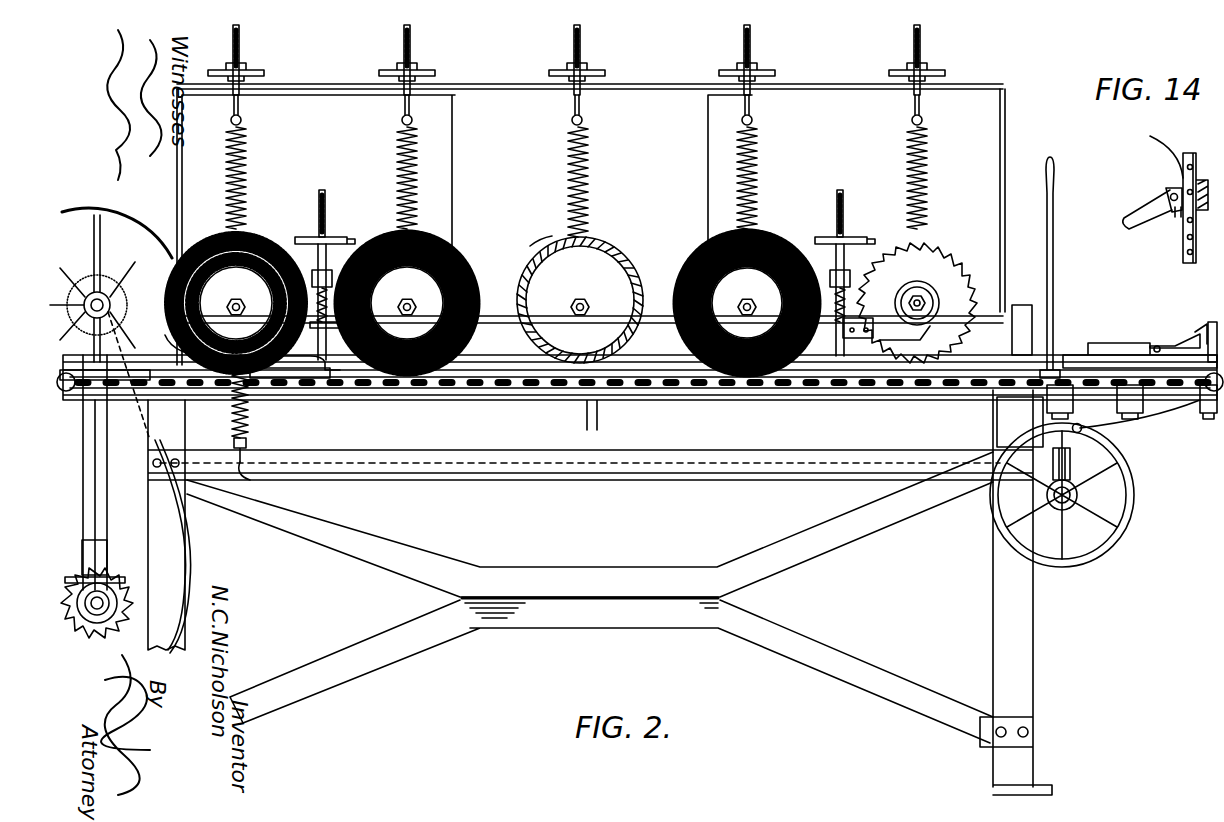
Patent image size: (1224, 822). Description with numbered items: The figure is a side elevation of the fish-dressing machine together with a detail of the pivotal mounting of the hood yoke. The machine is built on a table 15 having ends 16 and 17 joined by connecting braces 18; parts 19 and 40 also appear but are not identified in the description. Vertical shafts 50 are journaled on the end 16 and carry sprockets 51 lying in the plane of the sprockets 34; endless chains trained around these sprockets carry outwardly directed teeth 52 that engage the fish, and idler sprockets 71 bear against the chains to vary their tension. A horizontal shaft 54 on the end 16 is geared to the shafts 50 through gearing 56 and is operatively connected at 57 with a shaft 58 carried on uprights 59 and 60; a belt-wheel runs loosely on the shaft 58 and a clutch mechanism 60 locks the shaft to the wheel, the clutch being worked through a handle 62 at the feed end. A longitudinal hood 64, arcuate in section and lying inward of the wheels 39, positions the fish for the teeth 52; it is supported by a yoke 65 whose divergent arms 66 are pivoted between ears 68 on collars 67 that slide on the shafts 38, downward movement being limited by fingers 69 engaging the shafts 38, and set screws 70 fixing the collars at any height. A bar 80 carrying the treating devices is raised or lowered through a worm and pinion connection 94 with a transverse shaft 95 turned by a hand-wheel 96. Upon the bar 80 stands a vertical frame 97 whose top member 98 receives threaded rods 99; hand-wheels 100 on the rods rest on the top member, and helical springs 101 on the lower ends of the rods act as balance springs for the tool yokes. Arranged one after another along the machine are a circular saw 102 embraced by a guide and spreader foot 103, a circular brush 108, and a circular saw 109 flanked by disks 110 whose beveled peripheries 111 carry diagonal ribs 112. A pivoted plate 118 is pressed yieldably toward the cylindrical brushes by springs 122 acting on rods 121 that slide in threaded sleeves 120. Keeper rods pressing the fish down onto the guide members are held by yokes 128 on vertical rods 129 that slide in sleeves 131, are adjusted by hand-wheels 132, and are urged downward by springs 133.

In FIG. 2, the table 15 is at (692, 476).
In FIG. 2, the end of table 16 is at (172, 562).
In FIG. 2, the end of table 17 is at (1005, 572).
In FIG. 2, the connecting braces 18 is at (925, 303).
In FIG. 2, the frame member 19 is at (793, 450).
In FIG. 2, the sprockets 34 is at (1132, 408).
In FIG. 14, the shafts 38 is at (1192, 152).
In FIG. 2, the wheels 39 is at (1205, 400).
In FIG. 2, the connecting rod 40 is at (1170, 416).
In FIG. 2, the shafts 50 is at (106, 490).
In FIG. 2, the sprockets 51 is at (445, 388).
In FIG. 2, the teeth 52 is at (567, 388).
In FIG. 2, the horizontal shaft 54 is at (130, 606).
In FIG. 2, the gearing 56 is at (120, 586).
In FIG. 2, the operative connection 57 is at (108, 402).
In FIG. 2, the shaft 58 is at (105, 292).
In FIG. 2, the upright 59 is at (122, 215).
In FIG. 2, the clutch mechanism 60 is at (150, 330).
In FIG. 2, the handle 62 is at (1048, 272).
In FIG. 14, the hood 64 is at (1098, 343).
In FIG. 14, the yoke 65 is at (1150, 212).
In FIG. 14, the divergent arms 66 is at (1162, 194).
In FIG. 14, the collars 67 is at (1212, 320).
In FIG. 14, the ears 68 is at (1172, 206).
In FIG. 14, the fingers 69 is at (1178, 220).
In FIG. 2, the set screws 70 is at (236, 300).
In FIG. 2, the idler sprockets 71 is at (1052, 384).
In FIG. 2, the bar 80 is at (645, 318).
In FIG. 2, the worm and pinion connection 94 is at (1070, 472).
In FIG. 2, the transverse shaft 95 is at (1062, 502).
In FIG. 2, the hand-wheel 96 is at (1095, 553).
In FIG. 2, the vertical frame 97 is at (180, 186).
In FIG. 2, the top member 98 is at (644, 88).
In FIG. 2, the threaded rods 99 is at (240, 52).
In FIG. 2, the hand-wheels 100 is at (266, 72).
In FIG. 2, the helical springs 101 is at (248, 185).
In FIG. 2, the circular saw 102 is at (948, 262).
In FIG. 2, the guide and spreader foot 103 is at (897, 352).
In FIG. 2, the circular brush 108 is at (793, 207).
In FIG. 2, the circular saw 109 is at (612, 250).
In FIG. 2, the disks 110 is at (609, 330).
In FIG. 2, the beveled periphery 111 is at (608, 334).
In FIG. 2, the diagonal ribs 112 is at (542, 248).
In FIG. 2, the plate 118 is at (290, 360).
In FIG. 2, the sleeves 120 is at (250, 432).
In FIG. 2, the rods 121 is at (250, 460).
In FIG. 2, the springs 122 is at (232, 383).
In FIG. 2, the yokes 128 is at (841, 355).
In FIG. 2, the vertical rods 129 is at (323, 200).
In FIG. 2, the vertical sleeves 131 is at (342, 237).
In FIG. 2, the hand-wheels 132 is at (305, 244).
In FIG. 2, the springs 133 is at (330, 330).